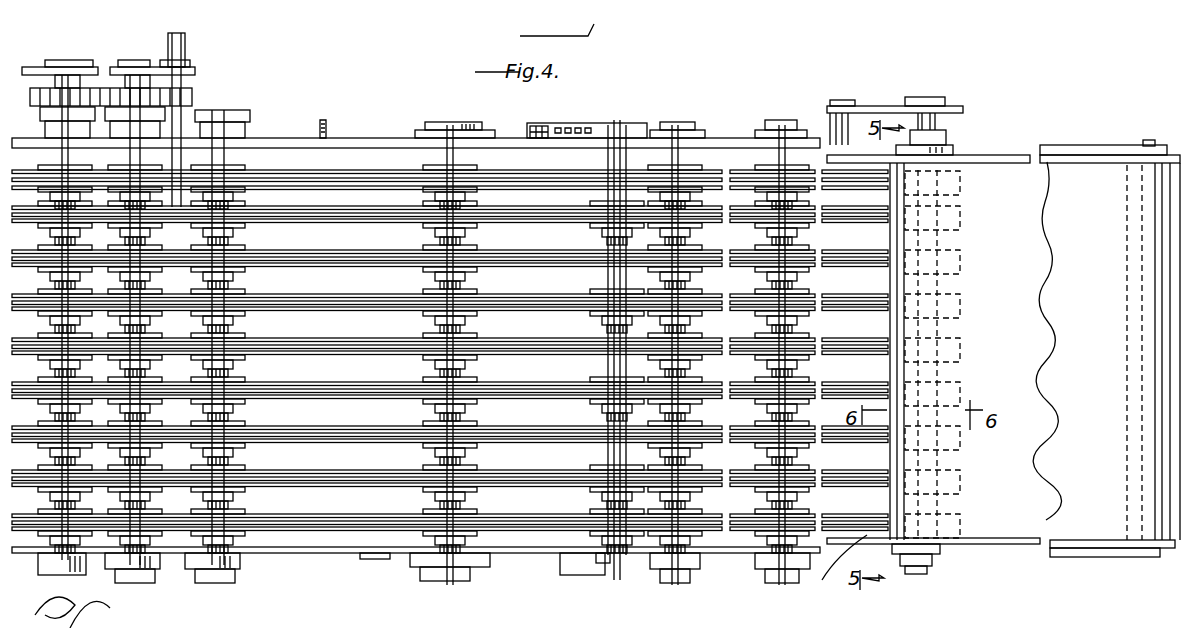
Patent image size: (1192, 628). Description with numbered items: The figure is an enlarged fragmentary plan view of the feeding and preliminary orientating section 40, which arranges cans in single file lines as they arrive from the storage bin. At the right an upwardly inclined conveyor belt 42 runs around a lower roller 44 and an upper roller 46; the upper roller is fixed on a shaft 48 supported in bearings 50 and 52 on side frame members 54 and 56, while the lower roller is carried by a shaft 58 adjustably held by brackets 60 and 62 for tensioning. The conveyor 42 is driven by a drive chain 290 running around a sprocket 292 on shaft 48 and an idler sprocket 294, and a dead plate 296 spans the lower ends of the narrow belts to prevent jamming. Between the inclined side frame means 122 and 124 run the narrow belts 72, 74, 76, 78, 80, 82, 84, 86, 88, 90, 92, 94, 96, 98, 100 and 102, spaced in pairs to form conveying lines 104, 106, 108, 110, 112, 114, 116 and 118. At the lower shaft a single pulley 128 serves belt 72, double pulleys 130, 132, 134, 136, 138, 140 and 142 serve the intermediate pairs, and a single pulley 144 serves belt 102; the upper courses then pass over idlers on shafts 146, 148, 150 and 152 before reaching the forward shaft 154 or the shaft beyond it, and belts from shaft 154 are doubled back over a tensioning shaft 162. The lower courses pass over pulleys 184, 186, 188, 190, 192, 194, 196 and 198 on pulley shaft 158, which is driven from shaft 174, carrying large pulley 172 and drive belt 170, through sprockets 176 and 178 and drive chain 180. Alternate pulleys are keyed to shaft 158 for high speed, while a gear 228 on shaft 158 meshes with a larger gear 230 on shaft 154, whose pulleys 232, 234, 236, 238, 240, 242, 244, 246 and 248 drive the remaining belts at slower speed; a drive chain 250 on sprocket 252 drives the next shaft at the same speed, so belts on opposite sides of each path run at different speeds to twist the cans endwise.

The feeding and preliminary orientating section 40 is at (970, 94).
The conveyor belt 42 is at (1058, 160).
The lower roller 44 is at (1128, 425).
The upper roller 46 is at (955, 367).
The shaft 48 is at (947, 136).
The bearing 50 is at (938, 568).
The bearing 52 is at (962, 142).
The side frame member 54 is at (966, 548).
The side frame member 56 is at (1038, 160).
The shaft 58 is at (1150, 140).
The bracket 60 is at (1086, 558).
The bracket 62 is at (1094, 162).
The narrow belt 72 is at (304, 550).
The narrow belt 74 is at (318, 485).
The narrow belt 76 is at (360, 465).
The narrow belt 78 is at (302, 443).
The narrow belt 80 is at (357, 422).
The narrow belt 82 is at (300, 400).
The narrow belt 84 is at (360, 380).
The narrow belt 86 is at (300, 358).
The narrow belt 88 is at (364, 337).
The narrow belt 90 is at (305, 315).
The narrow belt 92 is at (362, 297).
The narrow belt 94 is at (300, 275).
The narrow belt 96 is at (370, 250).
The narrow belt 98 is at (304, 230).
The narrow belt 100 is at (368, 206).
The narrow belt 102 is at (349, 178).
The conveying line 104 is at (499, 504).
The conveying line 106 is at (505, 460).
The conveying line 108 is at (505, 418).
The conveying line 110 is at (505, 377).
The conveying line 112 is at (505, 334).
The conveying line 114 is at (505, 294).
The conveying line 116 is at (505, 250).
The conveying line 118 is at (503, 204).
The side frame means 122 is at (378, 557).
The side frame means 124 is at (357, 135).
The single pulley 128 is at (110, 553).
The double pulley 130 is at (955, 488).
The double pulley 132 is at (955, 455).
The double pulley 134 is at (958, 390).
The double pulley 136 is at (961, 310).
The double pulley 138 is at (961, 271).
The double pulley 140 is at (963, 239).
The double pulley 142 is at (961, 205).
The single pulley 144 is at (965, 178).
The shaft 146 is at (804, 584).
The shaft 148 is at (668, 584).
The shaft 150 is at (445, 580).
The shaft 152 is at (233, 555).
The shaft 154 is at (42, 556).
The pulley shaft 158 is at (128, 161).
The shaft 162 is at (580, 556).
The drive belt 170 is at (300, 212).
The large pulley 172 is at (339, 212).
The shaft 174 is at (182, 38).
The sprocket 176 is at (122, 60).
The sprocket 178 is at (190, 56).
The drive chain 180 is at (134, 60).
The pulley 184 is at (126, 490).
The pulley 186 is at (120, 446).
The pulley 188 is at (118, 402).
The pulley 190 is at (120, 362).
The pulley 192 is at (124, 318).
The pulley 194 is at (122, 275).
The pulley 196 is at (128, 186).
The pulley 198 is at (143, 162).
The gear 228 is at (176, 95).
The larger gear 230 is at (33, 67).
The pulley 232 is at (53, 526).
The pulley 234 is at (53, 490).
The pulley 236 is at (53, 447).
The pulley 238 is at (53, 404).
The pulley 240 is at (53, 364).
The pulley 242 is at (53, 320).
The pulley 244 is at (55, 275).
The pulley 246 is at (58, 234).
The pulley 248 is at (45, 160).
The drive chain 250 is at (40, 60).
The sprocket 252 is at (81, 60).
The drive chain 290 is at (876, 106).
The sprocket 292 is at (918, 97).
The idler sprocket 294 is at (830, 106).
The dead plate 296 is at (844, 573).